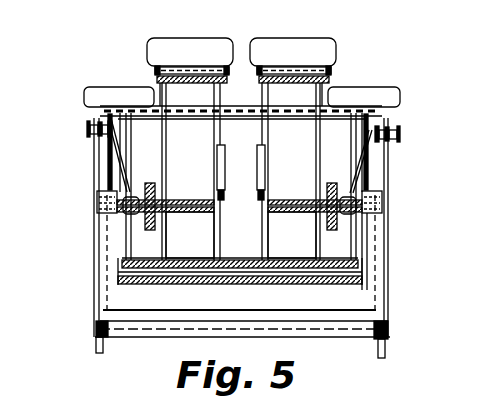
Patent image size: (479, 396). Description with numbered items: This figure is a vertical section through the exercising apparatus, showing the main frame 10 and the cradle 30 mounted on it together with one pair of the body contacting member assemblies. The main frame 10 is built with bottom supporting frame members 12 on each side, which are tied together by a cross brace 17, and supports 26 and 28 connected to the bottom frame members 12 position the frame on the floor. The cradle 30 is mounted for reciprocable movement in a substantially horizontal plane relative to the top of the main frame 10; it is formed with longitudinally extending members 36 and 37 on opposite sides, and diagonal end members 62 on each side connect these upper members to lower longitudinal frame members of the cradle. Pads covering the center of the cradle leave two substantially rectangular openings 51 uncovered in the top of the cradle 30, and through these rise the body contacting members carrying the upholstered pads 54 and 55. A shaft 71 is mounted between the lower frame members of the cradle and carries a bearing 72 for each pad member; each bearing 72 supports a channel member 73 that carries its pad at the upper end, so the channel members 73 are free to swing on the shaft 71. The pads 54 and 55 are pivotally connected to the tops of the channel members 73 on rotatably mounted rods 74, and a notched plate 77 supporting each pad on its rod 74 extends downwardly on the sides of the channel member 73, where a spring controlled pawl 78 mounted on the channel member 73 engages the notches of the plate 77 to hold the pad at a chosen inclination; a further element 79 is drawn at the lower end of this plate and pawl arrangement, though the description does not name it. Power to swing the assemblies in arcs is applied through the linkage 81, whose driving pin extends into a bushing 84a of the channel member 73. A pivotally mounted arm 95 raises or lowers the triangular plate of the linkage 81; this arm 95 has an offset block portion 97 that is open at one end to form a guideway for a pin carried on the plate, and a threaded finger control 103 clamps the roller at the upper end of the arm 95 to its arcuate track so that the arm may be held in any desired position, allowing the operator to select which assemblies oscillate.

The main frame 10 is at (392, 230).
The bottom supporting frame member 12 is at (108, 324).
The cross brace 17 is at (256, 328).
The support 26 is at (377, 351).
The support 28 is at (104, 348).
The cradle 30 is at (367, 262).
The longitudinally extending member 36 is at (102, 107).
The longitudinally extending member 37 is at (384, 112).
The rectangular opening 51 is at (157, 92).
The pad 54 is at (324, 37).
The pad 55 is at (204, 37).
The diagonal end member 62 is at (134, 131).
The shaft 71 is at (118, 270).
The bearing 72 is at (196, 279).
The channel member 73 is at (262, 240).
The rod 74 is at (157, 78).
The notched plate 77 is at (261, 133).
The spring controlled pawl 78 is at (257, 168).
The piston 79 is at (258, 196).
The linkage 81 is at (156, 231).
The bushing 84a is at (208, 215).
The pivotally mounted arm 95 is at (121, 150).
The offset block portion 97 is at (158, 172).
The threaded finger control 103 is at (86, 129).